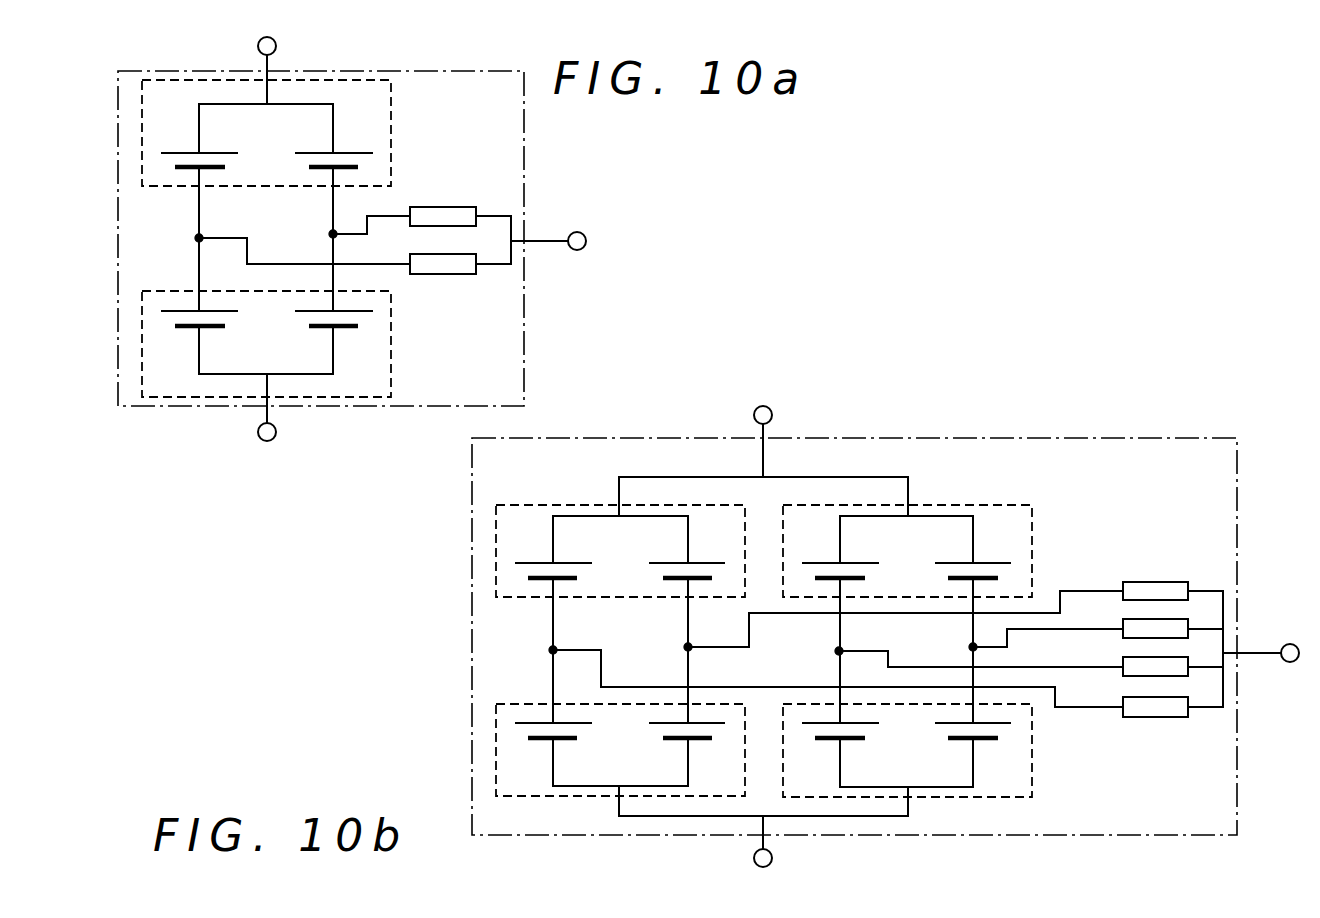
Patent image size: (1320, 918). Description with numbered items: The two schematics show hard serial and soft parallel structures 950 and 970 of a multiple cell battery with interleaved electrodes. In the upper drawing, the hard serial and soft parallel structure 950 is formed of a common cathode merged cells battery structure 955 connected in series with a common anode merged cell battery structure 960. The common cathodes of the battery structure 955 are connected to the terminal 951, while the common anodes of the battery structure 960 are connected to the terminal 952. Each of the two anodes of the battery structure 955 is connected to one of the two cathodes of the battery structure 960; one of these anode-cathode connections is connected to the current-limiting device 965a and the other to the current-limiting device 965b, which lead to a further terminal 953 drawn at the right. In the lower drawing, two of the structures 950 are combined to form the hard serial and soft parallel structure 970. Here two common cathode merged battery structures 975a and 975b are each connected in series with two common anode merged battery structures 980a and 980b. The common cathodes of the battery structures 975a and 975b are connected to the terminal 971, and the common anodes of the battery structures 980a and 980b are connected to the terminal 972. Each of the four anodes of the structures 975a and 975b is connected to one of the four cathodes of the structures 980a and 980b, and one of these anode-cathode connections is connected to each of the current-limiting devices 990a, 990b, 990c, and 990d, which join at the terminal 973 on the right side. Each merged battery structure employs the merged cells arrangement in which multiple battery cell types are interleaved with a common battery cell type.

In FIG. 10A, the hard serial and soft parallel structure 950 is at (336, 71).
In FIG. 10A, the terminal 951 is at (258, 46).
In FIG. 10A, the terminal 952 is at (258, 432).
In FIG. 10A, the third (sense) terminal 953 is at (578, 250).
In FIG. 10A, the common cathode merged cells battery structure 955 is at (144, 92).
In FIG. 10A, the common anode merged cell battery structure 960 is at (335, 406).
In FIG. 10A, the current-limiting device 965a is at (450, 207).
In FIG. 10A, the current-limiting device 965b is at (450, 274).
In FIG. 10B, the hard serial and soft parallel structure 970 is at (1128, 438).
In FIG. 10B, the terminal 971 is at (772, 413).
In FIG. 10B, the terminal 972 is at (754, 858).
In FIG. 10B, the third (sense) terminal 973 is at (1291, 662).
In FIG. 10B, the common cathode merged battery structure 975a is at (498, 505).
In FIG. 10B, the common cathode merged battery structure 975b is at (1004, 505).
In FIG. 10B, the common anode merged battery structure 980a is at (498, 704).
In FIG. 10B, the common anode merged battery structure 980b is at (1030, 797).
In FIG. 10B, the current-limiting device 990a is at (1140, 582).
In FIG. 10B, the current-limiting device 990b is at (1186, 618).
In FIG. 10B, the current-limiting device 990c is at (1183, 677).
In FIG. 10B, the current-limiting device 990d is at (1142, 717).